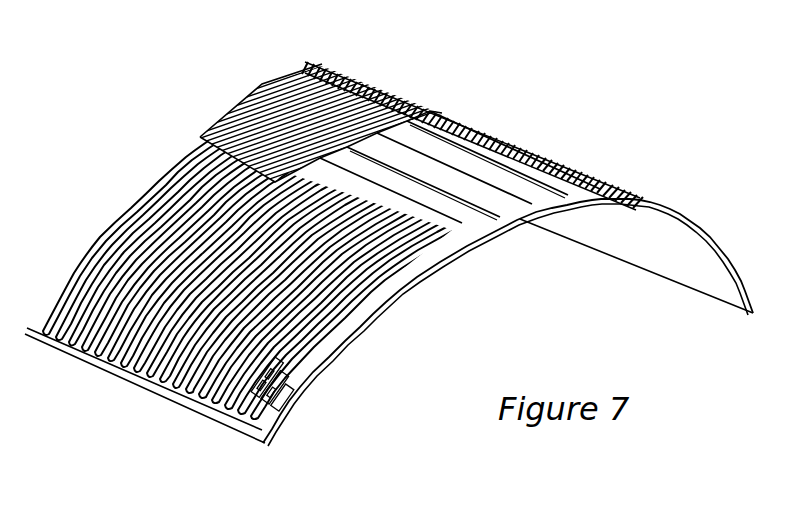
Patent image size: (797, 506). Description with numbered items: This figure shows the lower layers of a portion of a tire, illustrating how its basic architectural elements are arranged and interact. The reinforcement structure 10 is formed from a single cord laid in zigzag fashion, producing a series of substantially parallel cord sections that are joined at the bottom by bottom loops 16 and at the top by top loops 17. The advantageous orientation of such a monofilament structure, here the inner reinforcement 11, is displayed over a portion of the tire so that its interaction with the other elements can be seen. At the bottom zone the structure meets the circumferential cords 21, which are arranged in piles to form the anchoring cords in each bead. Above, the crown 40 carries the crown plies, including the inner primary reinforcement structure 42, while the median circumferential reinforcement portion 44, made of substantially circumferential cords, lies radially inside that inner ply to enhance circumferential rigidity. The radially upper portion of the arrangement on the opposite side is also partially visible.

The reinforcement structure 10 is at (96, 197).
The inner reinforcement 11 is at (330, 307).
The bottom loops 16 is at (110, 362).
The top loops 17 is at (400, 222).
The circumferential cords 21 is at (293, 400).
The crown 40 is at (426, 151).
The inner primary reinforcement structure 42 is at (270, 77).
The median circumferential reinforcement portion 44 is at (517, 221).